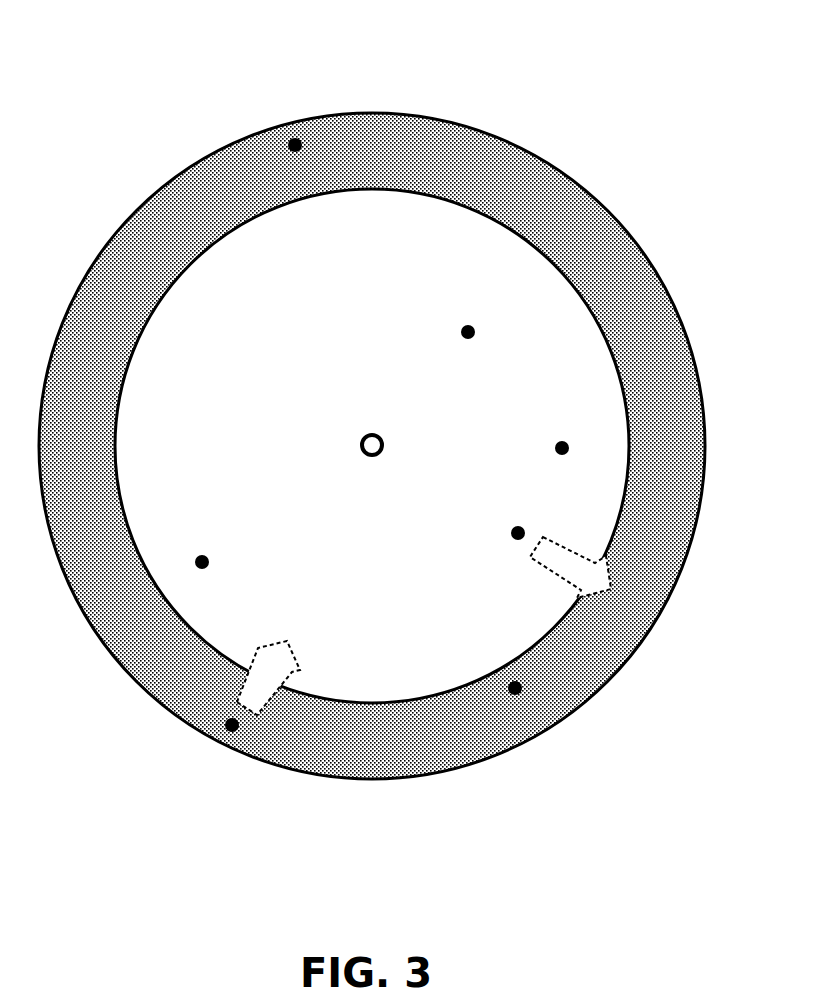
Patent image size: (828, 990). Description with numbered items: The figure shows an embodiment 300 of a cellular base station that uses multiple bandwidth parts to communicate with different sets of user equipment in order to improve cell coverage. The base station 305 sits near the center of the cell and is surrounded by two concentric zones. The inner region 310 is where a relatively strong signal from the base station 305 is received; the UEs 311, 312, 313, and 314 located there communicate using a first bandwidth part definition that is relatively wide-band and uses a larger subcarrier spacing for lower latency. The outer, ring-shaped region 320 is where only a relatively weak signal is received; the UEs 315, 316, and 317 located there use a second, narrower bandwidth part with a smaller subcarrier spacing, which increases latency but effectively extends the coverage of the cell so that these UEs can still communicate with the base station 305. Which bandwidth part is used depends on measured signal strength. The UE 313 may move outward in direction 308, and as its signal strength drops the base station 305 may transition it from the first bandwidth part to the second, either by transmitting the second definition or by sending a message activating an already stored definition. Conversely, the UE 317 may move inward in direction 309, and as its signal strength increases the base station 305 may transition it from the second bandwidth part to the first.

The embodiment of a cellular base station using multiple bandwidth parts 300 is at (84, 80).
The base station 305 is at (371, 433).
The direction 308 is at (592, 560).
The direction 309 is at (285, 639).
The region 310 is at (372, 446).
The UE 311 is at (465, 325).
The UE 312 is at (559, 441).
The UE 313 is at (515, 526).
The UE 314 is at (199, 555).
The UE 315 is at (293, 138).
The UE 316 is at (512, 681).
The UE 317 is at (232, 732).
The region 320 is at (372, 446).